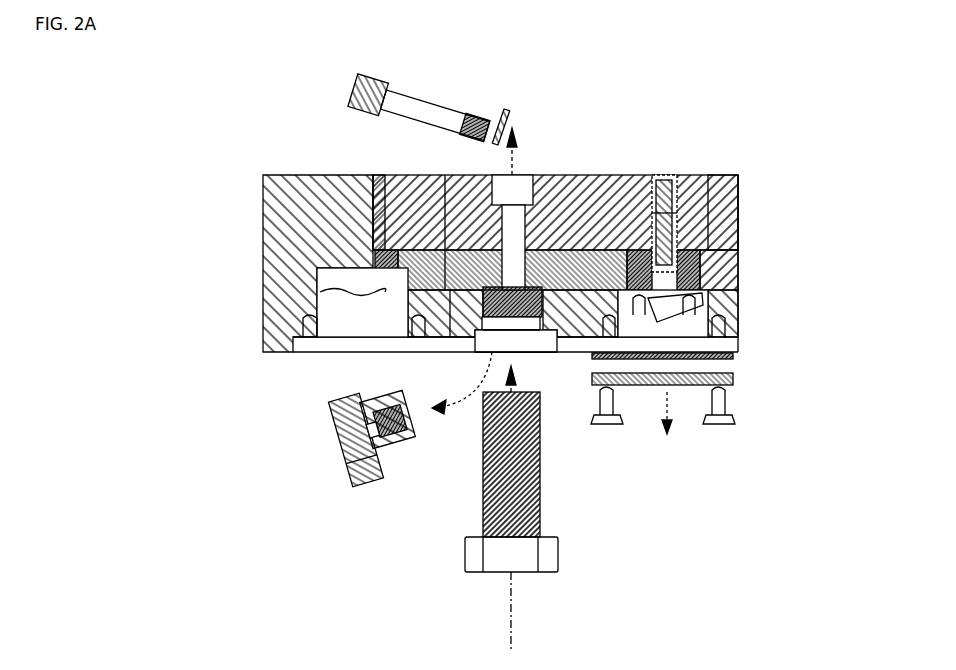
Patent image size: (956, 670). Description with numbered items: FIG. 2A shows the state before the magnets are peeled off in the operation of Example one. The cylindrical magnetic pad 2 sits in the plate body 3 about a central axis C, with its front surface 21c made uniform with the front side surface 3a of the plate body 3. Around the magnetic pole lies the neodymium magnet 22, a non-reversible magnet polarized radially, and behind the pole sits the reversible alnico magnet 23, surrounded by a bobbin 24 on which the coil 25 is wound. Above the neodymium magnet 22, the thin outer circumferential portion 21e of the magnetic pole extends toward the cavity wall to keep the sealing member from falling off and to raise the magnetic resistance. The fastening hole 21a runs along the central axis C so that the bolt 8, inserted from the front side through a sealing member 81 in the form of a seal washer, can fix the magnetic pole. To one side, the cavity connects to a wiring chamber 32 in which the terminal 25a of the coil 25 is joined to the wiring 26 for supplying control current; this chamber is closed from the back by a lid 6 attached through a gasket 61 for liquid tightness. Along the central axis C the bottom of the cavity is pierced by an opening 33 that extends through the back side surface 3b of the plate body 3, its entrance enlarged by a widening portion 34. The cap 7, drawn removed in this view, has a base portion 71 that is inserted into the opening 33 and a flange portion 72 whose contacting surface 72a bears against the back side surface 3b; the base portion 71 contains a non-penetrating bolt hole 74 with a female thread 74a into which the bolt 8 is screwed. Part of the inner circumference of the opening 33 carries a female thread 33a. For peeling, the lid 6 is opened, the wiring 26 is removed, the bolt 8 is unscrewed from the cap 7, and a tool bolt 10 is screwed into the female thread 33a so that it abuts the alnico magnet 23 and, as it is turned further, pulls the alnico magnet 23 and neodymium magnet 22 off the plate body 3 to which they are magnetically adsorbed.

The magnetic pad 2 is at (580, 175).
The plate body 3 is at (475, 267).
The front side surface 3a is at (318, 175).
The back side surface 3b is at (440, 175).
The lid 6 is at (735, 386).
The gasket 61 is at (735, 357).
The cap 7 is at (389, 461).
The base portion 71 is at (388, 419).
The flange portion 72 is at (355, 439).
The contacting surface 72a is at (350, 470).
The bolt hole 74 is at (390, 421).
The female thread 74a is at (372, 430).
The bolt 8 is at (437, 107).
The sealing member 81 is at (508, 120).
The tool bolt 10 is at (540, 480).
The fastening hole 21a is at (530, 175).
The front surface 21c is at (420, 175).
The outer circumferential portion 21e is at (652, 178).
The neodymium magnet 22 is at (715, 215).
The alnico magnet 23 is at (720, 230).
The bobbin 24 is at (738, 220).
The coil 25 is at (738, 258).
The terminal 25a is at (738, 288).
The wiring 26 is at (738, 303).
The wiring chamber 32 is at (514, 302).
The opening 33 is at (518, 337).
The female thread 33a is at (550, 352).
The widening portion 34 is at (485, 340).
The central axis C is at (520, 611).